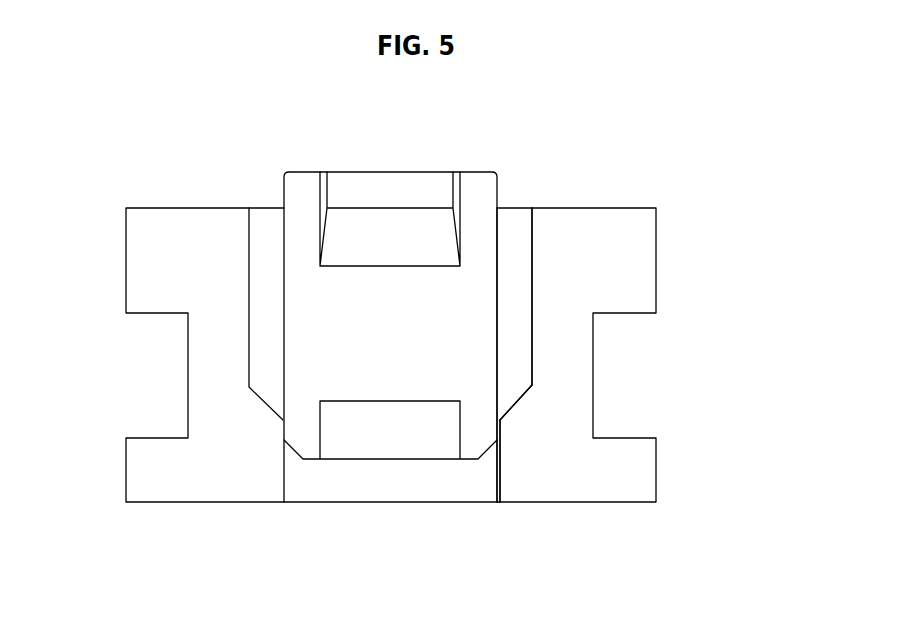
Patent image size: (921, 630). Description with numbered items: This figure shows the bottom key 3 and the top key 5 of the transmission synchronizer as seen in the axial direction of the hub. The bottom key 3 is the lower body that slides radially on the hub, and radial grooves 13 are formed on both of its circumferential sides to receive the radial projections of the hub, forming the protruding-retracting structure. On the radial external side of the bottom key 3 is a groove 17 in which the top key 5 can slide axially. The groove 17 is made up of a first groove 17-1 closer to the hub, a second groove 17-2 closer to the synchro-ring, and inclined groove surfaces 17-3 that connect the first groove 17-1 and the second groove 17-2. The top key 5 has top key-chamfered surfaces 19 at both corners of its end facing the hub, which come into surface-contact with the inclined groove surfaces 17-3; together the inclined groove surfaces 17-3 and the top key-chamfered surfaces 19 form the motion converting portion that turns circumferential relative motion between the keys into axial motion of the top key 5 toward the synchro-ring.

The bottom key 3 is at (173, 207).
The top key 5 is at (306, 192).
The radial grooves 13 is at (148, 372).
The groove 17 is at (825, 268).
The first groove 17-1 is at (499, 497).
The second groove 17-2 is at (532, 304).
The inclined groove surfaces 17-3 is at (510, 392).
The top key-chamfered surfaces 19 is at (294, 455).